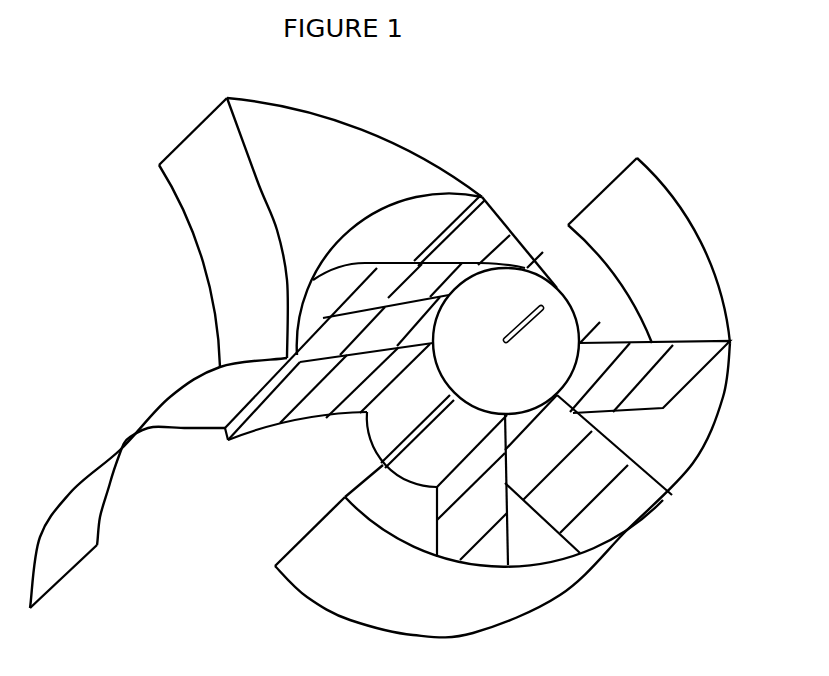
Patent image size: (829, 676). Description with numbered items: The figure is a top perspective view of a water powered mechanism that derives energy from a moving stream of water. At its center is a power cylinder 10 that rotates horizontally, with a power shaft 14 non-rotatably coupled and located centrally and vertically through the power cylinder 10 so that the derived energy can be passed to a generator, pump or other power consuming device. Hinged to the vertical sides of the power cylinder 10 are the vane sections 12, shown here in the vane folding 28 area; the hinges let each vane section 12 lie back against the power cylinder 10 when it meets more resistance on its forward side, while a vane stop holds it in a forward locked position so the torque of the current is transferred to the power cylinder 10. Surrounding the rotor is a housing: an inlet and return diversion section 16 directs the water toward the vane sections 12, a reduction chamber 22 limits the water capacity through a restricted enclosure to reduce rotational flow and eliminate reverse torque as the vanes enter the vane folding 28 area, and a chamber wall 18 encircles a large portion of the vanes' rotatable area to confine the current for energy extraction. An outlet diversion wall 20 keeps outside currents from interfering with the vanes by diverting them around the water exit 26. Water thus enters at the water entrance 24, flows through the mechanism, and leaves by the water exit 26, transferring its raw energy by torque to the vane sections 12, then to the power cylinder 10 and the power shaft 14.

The power cylinder 10 is at (523, 382).
The vane sections 12 is at (590, 358).
The power shaft 14 is at (543, 307).
The inlet and return diversion section 16 is at (312, 183).
The chamber wall 18 is at (424, 591).
The outlet diversion wall 20 is at (78, 512).
The reduction chamber 22 is at (343, 278).
The water entrance 24 is at (530, 181).
The water exit 26 is at (278, 479).
The vane folding 28 is at (415, 290).